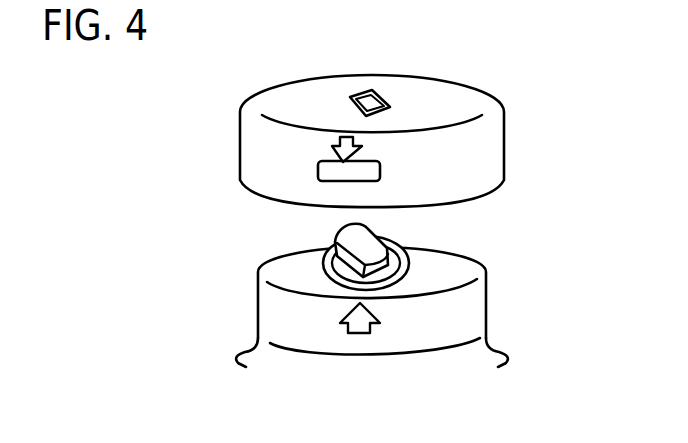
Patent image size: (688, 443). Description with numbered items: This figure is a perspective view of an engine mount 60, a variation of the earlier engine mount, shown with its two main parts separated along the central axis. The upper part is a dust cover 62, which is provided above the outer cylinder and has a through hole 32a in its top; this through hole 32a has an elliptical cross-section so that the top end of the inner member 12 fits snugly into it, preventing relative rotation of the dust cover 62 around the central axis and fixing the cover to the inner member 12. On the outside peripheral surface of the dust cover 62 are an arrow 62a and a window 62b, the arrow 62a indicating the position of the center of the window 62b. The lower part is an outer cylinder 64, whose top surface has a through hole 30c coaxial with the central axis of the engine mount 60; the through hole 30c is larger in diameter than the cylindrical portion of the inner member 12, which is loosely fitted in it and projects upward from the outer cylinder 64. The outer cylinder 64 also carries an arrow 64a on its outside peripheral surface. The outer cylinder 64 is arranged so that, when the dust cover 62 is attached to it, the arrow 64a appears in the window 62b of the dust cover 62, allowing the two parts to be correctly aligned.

The engine mount 60 is at (166, 116).
The dust cover 62 is at (490, 150).
The through hole 32a is at (376, 93).
The arrow 62a is at (360, 150).
The window 62b is at (382, 171).
The outer cylinder 64 is at (490, 302).
The arrow 64a is at (373, 328).
The through hole 30c is at (336, 274).
The inner member 12 is at (372, 250).